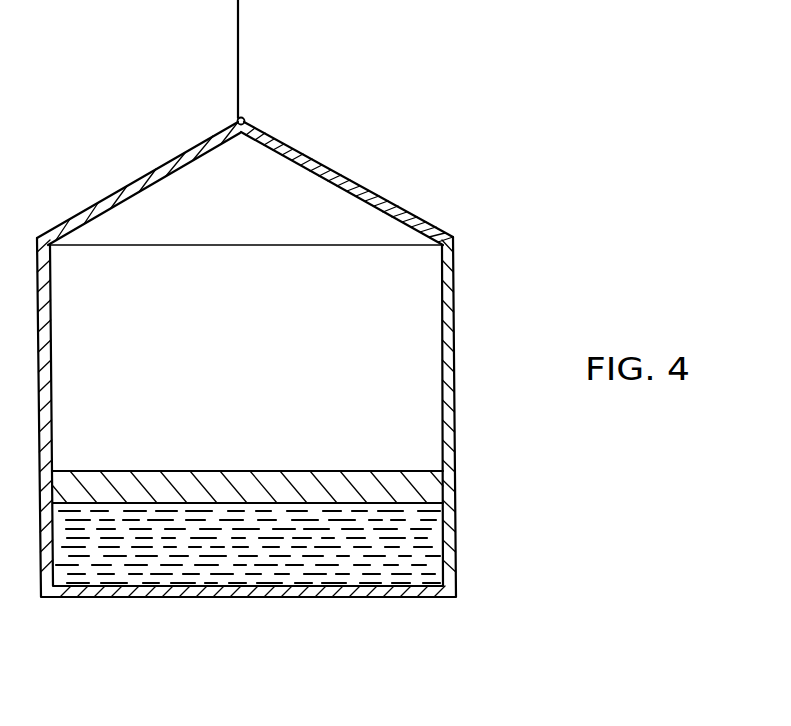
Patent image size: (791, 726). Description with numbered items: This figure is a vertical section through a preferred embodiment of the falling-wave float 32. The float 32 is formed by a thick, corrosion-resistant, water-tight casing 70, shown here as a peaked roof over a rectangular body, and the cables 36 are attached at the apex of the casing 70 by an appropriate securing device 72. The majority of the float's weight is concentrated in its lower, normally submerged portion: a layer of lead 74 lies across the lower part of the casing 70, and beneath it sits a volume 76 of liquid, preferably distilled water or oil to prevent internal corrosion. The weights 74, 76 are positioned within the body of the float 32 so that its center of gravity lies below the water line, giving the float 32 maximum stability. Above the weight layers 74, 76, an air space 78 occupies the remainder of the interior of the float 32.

The falling-wave float 32 is at (306, 146).
The cables 36 is at (238, 55).
The casing 70 is at (383, 198).
The securing device 72 is at (237, 119).
The layer of lead 74 is at (436, 494).
The volume of liquid 76 is at (403, 555).
The air space 78 is at (251, 380).